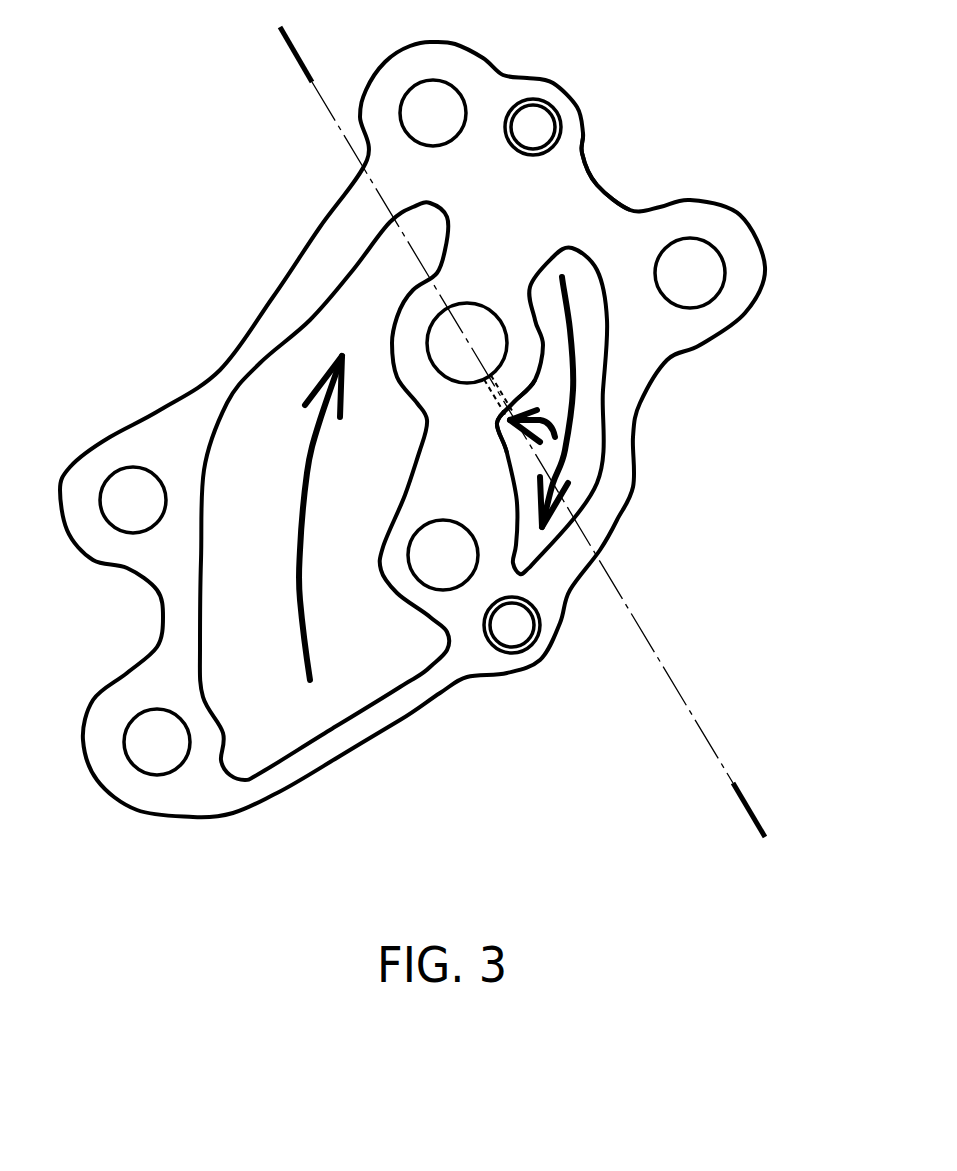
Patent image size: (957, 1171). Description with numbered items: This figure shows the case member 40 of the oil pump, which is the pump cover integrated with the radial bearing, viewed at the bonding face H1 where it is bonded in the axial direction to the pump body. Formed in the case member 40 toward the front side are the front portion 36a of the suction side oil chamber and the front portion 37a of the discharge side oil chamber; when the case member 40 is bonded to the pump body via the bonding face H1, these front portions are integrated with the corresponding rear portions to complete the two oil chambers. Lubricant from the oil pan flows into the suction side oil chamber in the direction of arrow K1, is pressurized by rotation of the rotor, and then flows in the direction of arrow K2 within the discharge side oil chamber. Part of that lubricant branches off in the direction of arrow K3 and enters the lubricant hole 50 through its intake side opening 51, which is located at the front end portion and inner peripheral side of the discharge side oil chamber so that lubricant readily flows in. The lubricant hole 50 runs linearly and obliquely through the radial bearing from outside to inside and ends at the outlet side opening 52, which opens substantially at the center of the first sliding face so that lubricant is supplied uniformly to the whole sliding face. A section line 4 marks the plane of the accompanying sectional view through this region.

The case member 40 is at (270, 295).
The bonding face H1 is at (593, 188).
The front portion of the suction side oil chamber 36a is at (237, 450).
The front portion of the discharge side oil chamber 37a is at (583, 437).
The lubricant hole 50 is at (486, 401).
The intake side opening 51 is at (507, 410).
The outlet side opening 52 is at (490, 377).
The arrow K1 is at (297, 577).
The arrow K2 is at (563, 463).
The arrow K3 is at (552, 450).
The section line 4- 4 is at (304, 40).